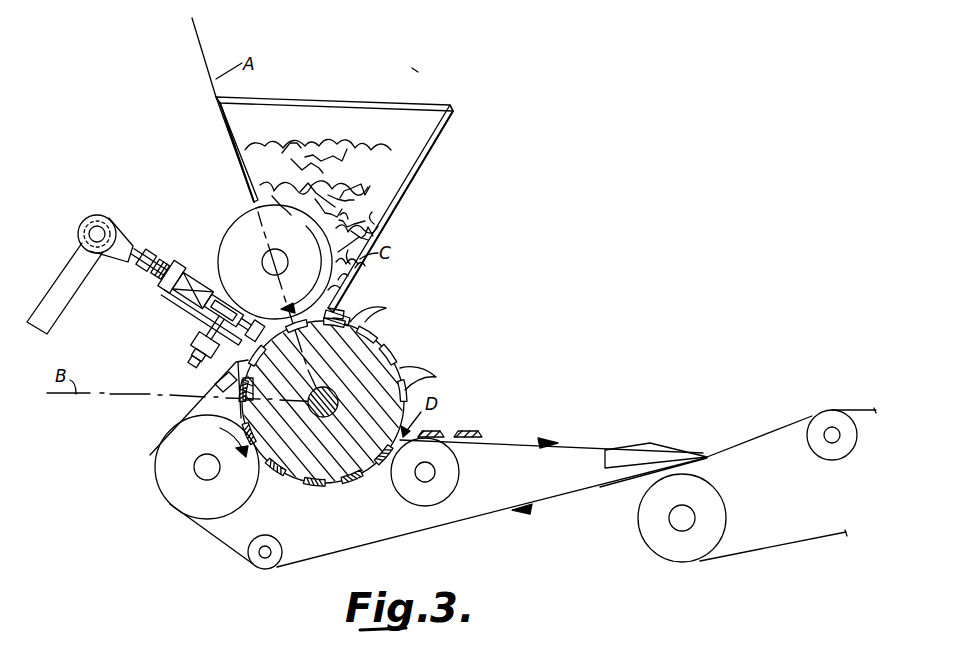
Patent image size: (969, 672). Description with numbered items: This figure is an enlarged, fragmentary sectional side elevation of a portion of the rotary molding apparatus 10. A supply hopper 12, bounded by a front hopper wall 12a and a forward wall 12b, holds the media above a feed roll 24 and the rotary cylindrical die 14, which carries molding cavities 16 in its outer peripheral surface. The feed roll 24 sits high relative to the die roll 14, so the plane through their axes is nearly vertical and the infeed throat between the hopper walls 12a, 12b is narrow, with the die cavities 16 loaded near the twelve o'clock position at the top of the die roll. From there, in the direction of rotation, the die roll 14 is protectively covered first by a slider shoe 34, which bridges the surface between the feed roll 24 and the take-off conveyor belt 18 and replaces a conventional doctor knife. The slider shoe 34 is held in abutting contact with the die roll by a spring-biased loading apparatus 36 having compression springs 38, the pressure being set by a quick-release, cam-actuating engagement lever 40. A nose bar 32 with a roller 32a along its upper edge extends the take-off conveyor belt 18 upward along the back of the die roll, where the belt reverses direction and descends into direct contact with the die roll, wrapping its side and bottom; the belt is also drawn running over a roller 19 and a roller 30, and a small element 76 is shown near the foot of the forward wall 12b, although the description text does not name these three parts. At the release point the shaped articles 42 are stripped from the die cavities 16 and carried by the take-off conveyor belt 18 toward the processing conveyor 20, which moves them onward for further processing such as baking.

The rotary molding apparatus 10 is at (405, 92).
The supply hopper 12 is at (297, 110).
The front hopper wall 12a is at (235, 140).
The forward wall of the supply hopper 12b is at (410, 178).
The rotary cylindrical die 14 is at (326, 444).
The molding cavities 16 is at (353, 321).
The take-off conveyor belt 18 is at (372, 546).
The conveyor roller 19 is at (175, 473).
The processing conveyor 20 is at (762, 440).
The feed roll 24 is at (248, 226).
The support roller 30 is at (450, 472).
The nose bar 32 is at (234, 363).
The roller 32a is at (233, 364).
The slider shoe 34 is at (240, 352).
The spring-biased loading apparatus 36 is at (193, 262).
The compression springs 38 is at (185, 292).
The quick-release cam-actuating engagement lever 40 is at (78, 286).
The shaped articles 42 is at (466, 432).
The scraper 76 is at (334, 310).